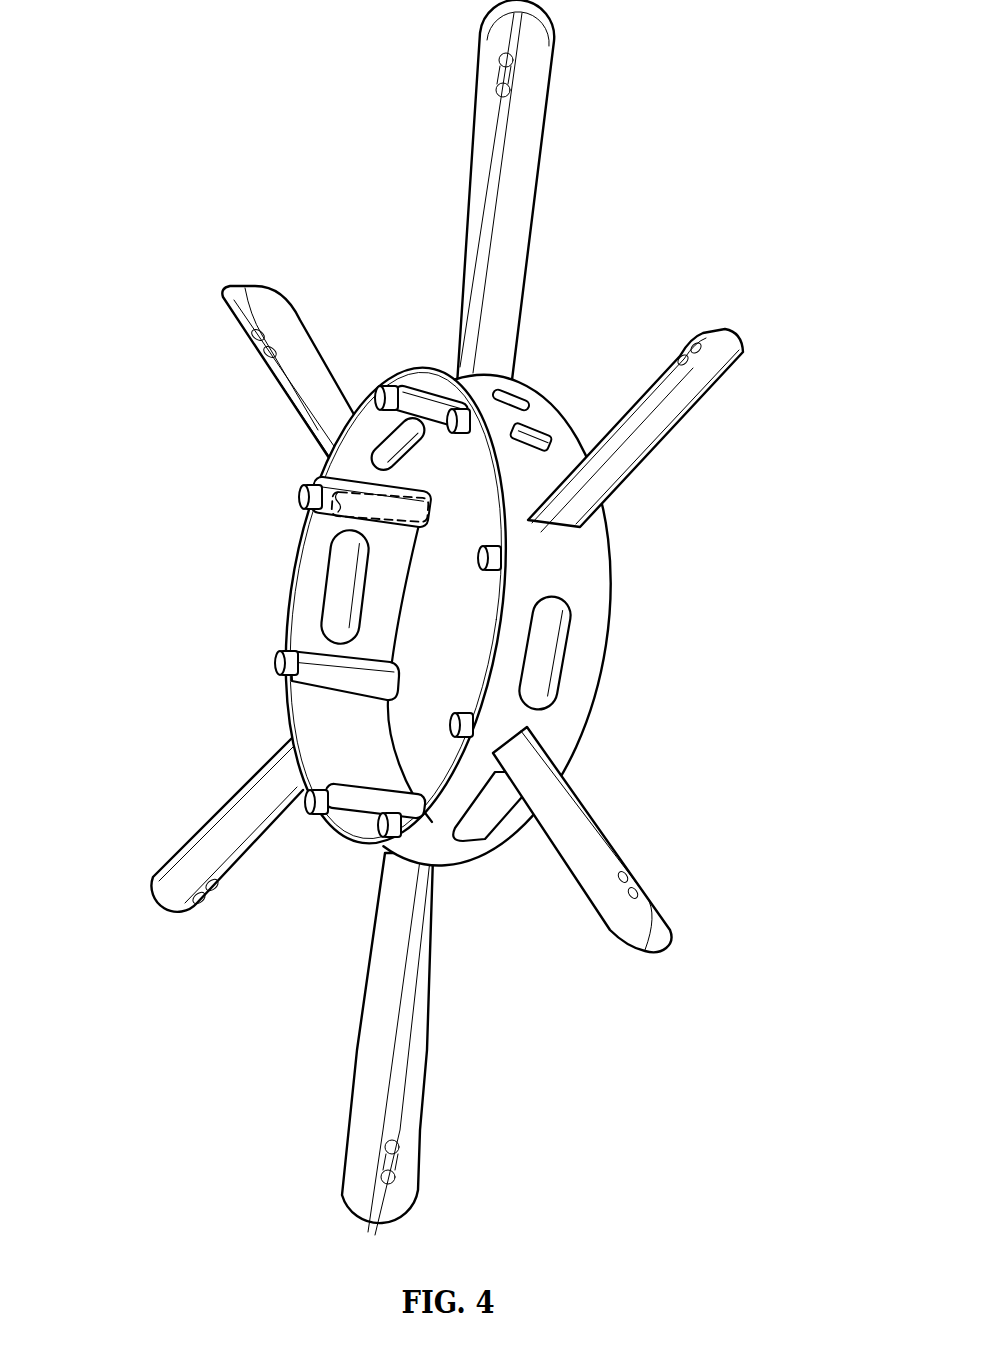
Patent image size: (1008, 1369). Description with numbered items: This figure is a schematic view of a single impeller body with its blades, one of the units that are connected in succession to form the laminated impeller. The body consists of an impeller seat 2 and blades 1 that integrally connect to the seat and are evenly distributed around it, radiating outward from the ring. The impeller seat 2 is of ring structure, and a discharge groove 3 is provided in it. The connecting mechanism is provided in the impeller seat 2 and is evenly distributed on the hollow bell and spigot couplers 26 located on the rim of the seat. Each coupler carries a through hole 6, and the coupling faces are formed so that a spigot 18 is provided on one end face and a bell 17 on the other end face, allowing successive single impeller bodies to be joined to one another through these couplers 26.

The blades 1 is at (418, 1030).
The impeller seat 2 is at (312, 558).
The discharge groove 3 is at (552, 658).
The through hole 6 is at (387, 500).
The bell 17 is at (423, 513).
The spigot 18 is at (385, 388).
The hollow bell and spigot coupler 26 is at (333, 663).